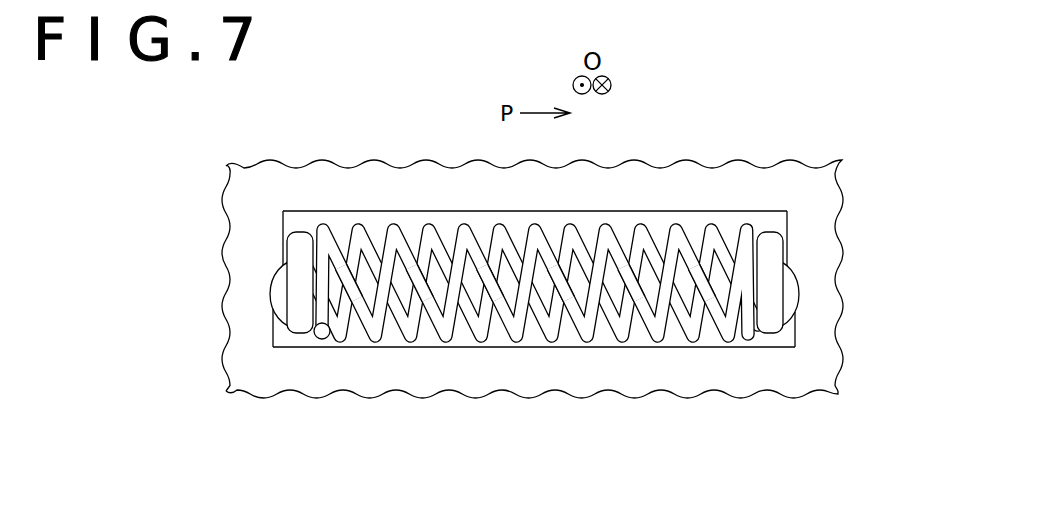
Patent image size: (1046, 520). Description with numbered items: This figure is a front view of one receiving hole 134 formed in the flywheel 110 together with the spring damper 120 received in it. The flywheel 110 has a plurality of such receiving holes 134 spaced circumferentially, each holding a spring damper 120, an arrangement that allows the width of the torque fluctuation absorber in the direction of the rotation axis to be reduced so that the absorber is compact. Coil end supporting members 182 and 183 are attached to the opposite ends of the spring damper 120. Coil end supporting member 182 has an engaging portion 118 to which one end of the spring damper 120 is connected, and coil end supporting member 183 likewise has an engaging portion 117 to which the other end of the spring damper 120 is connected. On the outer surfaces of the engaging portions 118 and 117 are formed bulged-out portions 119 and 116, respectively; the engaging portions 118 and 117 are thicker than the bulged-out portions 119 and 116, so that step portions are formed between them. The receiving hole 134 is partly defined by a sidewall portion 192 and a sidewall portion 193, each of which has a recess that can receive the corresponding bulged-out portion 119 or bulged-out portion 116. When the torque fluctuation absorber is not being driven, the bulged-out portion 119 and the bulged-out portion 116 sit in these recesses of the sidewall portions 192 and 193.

The flywheel 110 is at (652, 198).
The spring damper 120 is at (535, 238).
The coil end supporting member 182 is at (764, 245).
The coil end supporting member 183 is at (300, 250).
The sidewall portion 192 is at (798, 235).
The sidewall portion 193 is at (266, 237).
The bulged-out portion 116 is at (281, 341).
The engaging portion 117 is at (298, 318).
The engaging portion 118 is at (767, 335).
The bulged-out portion 119 is at (797, 341).
The receiving hole 134 is at (538, 341).